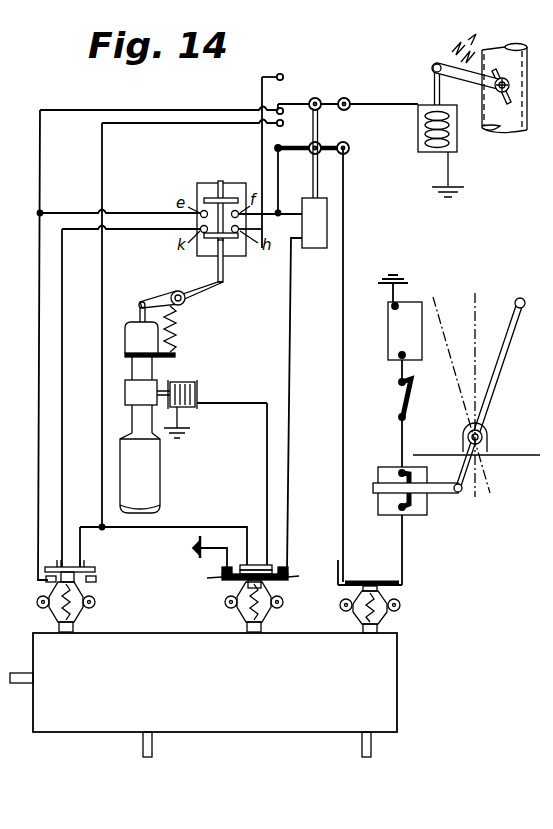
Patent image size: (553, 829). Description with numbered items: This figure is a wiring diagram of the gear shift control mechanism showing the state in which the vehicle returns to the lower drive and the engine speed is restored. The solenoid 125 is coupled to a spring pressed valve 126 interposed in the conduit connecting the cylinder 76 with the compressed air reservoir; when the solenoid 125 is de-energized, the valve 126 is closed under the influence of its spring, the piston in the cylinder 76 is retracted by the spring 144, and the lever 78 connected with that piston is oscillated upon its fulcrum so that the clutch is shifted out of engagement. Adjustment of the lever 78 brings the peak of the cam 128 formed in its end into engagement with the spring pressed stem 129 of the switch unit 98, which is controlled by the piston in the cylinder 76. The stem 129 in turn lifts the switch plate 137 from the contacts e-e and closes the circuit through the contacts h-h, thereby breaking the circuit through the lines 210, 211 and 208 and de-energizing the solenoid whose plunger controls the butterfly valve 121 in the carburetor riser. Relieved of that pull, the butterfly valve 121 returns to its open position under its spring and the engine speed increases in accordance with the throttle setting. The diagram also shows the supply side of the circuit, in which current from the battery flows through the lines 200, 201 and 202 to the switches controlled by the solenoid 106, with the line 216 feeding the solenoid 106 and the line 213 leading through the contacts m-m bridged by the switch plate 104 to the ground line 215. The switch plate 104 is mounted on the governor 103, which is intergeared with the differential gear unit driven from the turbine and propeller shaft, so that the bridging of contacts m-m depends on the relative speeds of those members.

The cylinder 76 is at (131, 321).
The lever 78 is at (165, 296).
The switch unit 98 is at (192, 212).
The governor 103 is at (284, 603).
The switch plate 104 is at (272, 570).
The solenoid 106 is at (312, 249).
The butterfly valve 121 is at (472, 115).
The solenoid 125 is at (181, 382).
The spring pressed valve 126 is at (144, 387).
The cam 128 is at (222, 287).
The switch stem 129 is at (224, 270).
The switch plate 137 is at (224, 181).
The spring 144 is at (175, 311).
The line 200 is at (404, 432).
The line 201 is at (403, 548).
The line 202 is at (343, 407).
The line 208 is at (350, 105).
The line 210 is at (120, 212).
The line 211 is at (170, 111).
The line 213 is at (291, 350).
The ground line 215 is at (217, 552).
The line 216 is at (280, 172).